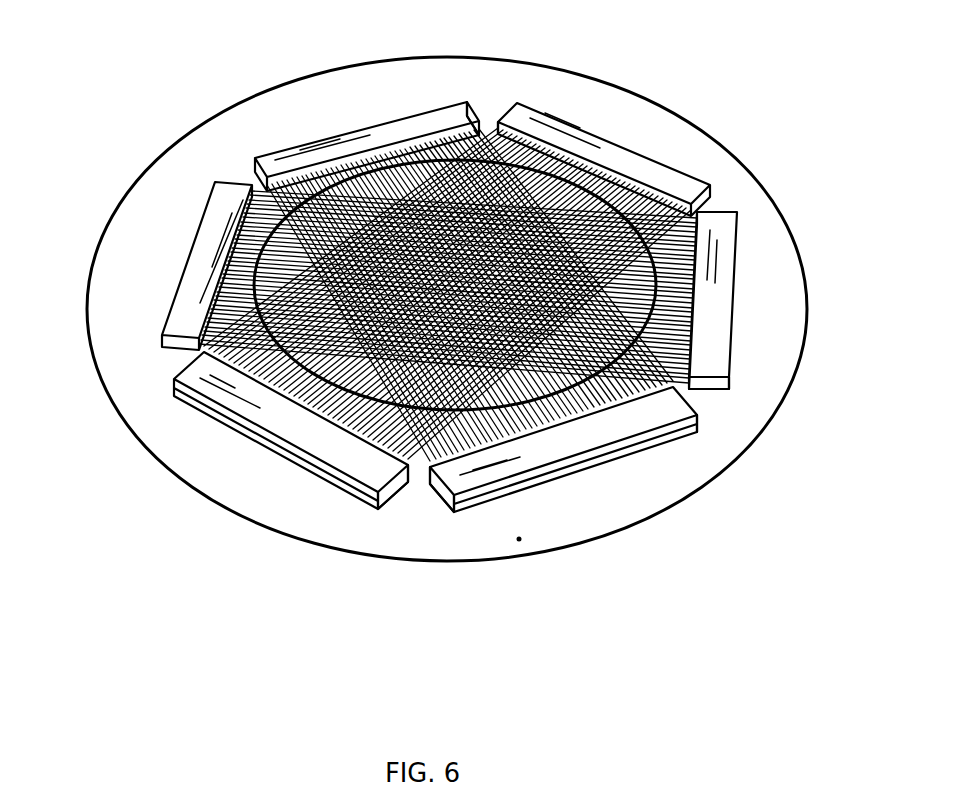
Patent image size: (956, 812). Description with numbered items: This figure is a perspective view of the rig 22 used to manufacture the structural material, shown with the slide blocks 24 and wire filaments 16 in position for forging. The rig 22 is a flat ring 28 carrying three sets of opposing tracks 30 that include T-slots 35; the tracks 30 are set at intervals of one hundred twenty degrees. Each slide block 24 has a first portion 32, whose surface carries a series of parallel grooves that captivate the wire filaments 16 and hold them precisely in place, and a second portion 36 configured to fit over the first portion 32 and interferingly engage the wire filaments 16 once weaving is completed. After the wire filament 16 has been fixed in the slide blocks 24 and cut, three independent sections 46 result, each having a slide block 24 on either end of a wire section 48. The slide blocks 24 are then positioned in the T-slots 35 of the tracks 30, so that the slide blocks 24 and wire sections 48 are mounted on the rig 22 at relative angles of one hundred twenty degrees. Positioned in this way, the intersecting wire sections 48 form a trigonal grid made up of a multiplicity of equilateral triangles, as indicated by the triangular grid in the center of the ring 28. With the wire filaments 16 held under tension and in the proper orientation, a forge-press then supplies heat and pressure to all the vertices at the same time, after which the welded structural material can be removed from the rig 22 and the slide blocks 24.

The wire filament 16 is at (205, 332).
The rig 22 is at (408, 565).
The slide block 24 is at (662, 153).
The flat ring 28 is at (520, 540).
The track 30 is at (480, 102).
The first portion 32 is at (270, 426).
The T-slot 35 is at (375, 510).
The second portion 36 is at (413, 126).
The independent section 46 is at (592, 117).
The wire section 48 is at (393, 207).